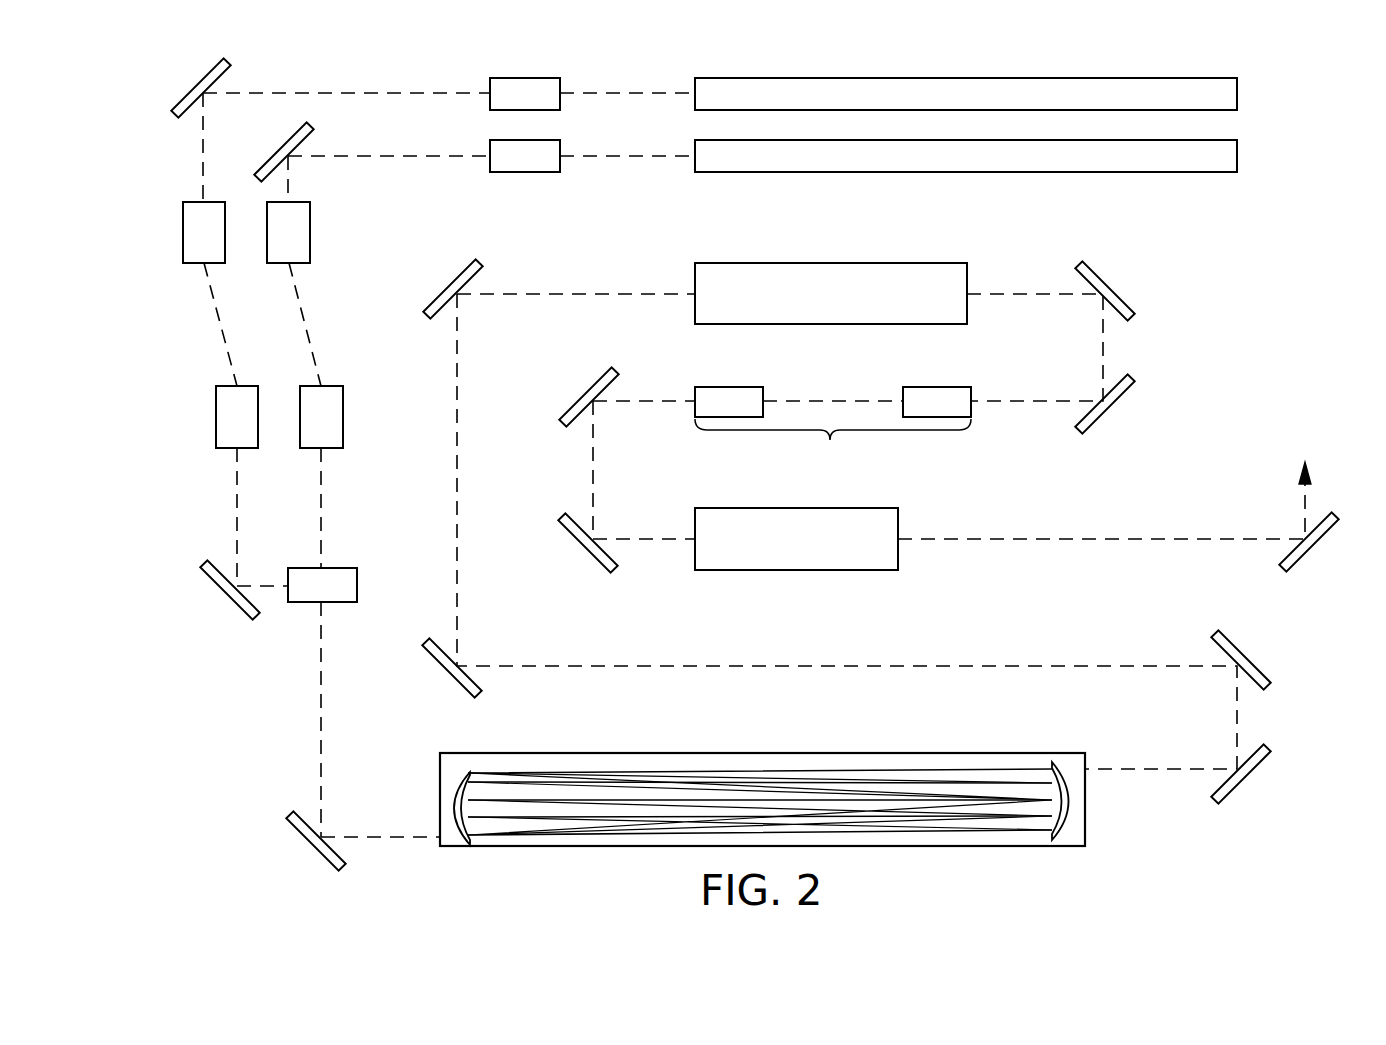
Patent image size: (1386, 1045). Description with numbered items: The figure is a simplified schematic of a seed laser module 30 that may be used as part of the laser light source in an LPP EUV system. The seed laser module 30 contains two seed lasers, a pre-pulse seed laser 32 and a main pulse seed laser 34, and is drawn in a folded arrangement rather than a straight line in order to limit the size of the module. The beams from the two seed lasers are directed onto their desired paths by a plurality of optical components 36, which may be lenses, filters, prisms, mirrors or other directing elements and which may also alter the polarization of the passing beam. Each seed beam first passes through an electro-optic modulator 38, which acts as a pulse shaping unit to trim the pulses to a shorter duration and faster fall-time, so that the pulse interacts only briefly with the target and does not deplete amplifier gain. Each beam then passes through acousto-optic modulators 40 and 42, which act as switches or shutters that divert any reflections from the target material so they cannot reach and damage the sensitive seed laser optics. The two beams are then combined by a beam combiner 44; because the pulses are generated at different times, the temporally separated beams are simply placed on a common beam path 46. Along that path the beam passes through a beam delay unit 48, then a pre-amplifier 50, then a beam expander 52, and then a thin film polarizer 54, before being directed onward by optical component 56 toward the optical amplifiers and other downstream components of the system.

The seed laser module 30 is at (1233, 270).
The pre-pulse seed laser 32 is at (966, 94).
The main pulse seed laser 34 is at (966, 156).
The optical components 36 is at (242, 73).
The electro-optic modulator 38 is at (525, 125).
The acousto-optic modulator 40 is at (246, 232).
The acousto-optic modulator 42 is at (279, 417).
The beam combiner 44 is at (322, 585).
The common beam path 46 is at (313, 683).
The beam delay unit 48 is at (437, 768).
The pre-amplifier 50 is at (831, 293).
The beam expander 52 is at (833, 431).
The thin film polarizer 54 is at (796, 539).
The optical component 56 is at (1288, 530).